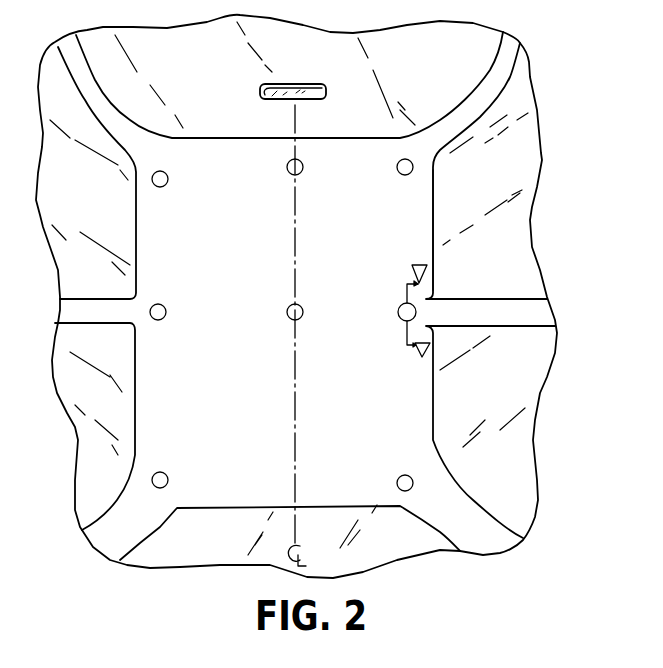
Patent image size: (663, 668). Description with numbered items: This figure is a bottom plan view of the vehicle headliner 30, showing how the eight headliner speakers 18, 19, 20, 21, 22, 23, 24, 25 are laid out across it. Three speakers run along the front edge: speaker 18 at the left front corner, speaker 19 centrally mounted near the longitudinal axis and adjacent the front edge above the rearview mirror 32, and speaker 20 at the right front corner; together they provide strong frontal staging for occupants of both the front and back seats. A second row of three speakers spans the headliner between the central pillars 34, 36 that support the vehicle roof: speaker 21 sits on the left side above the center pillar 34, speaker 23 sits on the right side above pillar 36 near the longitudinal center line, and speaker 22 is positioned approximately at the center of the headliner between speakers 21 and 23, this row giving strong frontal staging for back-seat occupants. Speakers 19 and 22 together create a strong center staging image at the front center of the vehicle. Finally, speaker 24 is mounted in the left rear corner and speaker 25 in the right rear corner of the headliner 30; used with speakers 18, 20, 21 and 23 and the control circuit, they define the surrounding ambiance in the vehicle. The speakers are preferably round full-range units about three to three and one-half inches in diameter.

The speaker 18 is at (398, 164).
The speaker 19 is at (303, 166).
The speaker 20 is at (168, 177).
The speaker 21 is at (398, 310).
The speaker 22 is at (303, 311).
The speaker 23 is at (166, 311).
The speaker 24 is at (397, 479).
The speaker 25 is at (168, 479).
The vehicle headliner 30 is at (436, 235).
The rearview mirror 32 is at (350, 70).
The center pillar 34 is at (490, 320).
The center pillar 36 is at (120, 317).